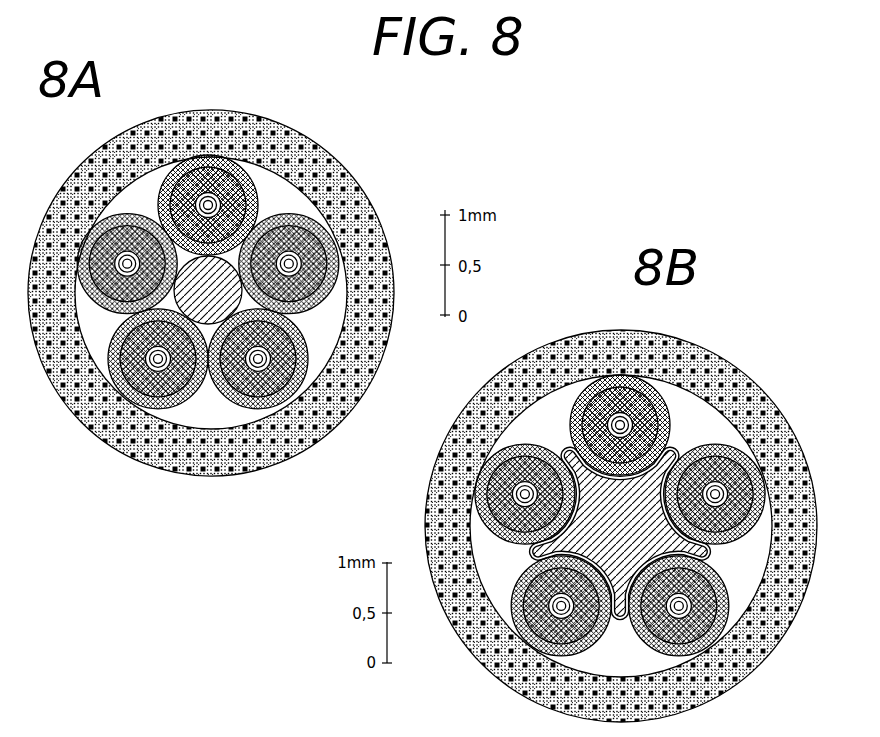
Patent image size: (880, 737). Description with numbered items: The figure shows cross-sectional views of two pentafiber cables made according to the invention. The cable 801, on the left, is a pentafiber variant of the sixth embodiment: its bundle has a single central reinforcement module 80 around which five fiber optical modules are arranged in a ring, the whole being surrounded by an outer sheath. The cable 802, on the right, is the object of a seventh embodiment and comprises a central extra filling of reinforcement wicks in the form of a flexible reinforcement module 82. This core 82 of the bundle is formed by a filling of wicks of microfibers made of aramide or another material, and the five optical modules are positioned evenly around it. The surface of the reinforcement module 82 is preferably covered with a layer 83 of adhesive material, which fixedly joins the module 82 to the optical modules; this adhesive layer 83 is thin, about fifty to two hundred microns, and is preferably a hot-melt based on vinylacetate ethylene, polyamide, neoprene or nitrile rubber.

The central reinforcement module 80 is at (205, 300).
The flexible reinforcement module 82 is at (567, 455).
The adhesive layer 83 is at (680, 452).
The pentafiber cable 801 is at (175, 525).
The pentafiber cable 802 is at (392, 680).